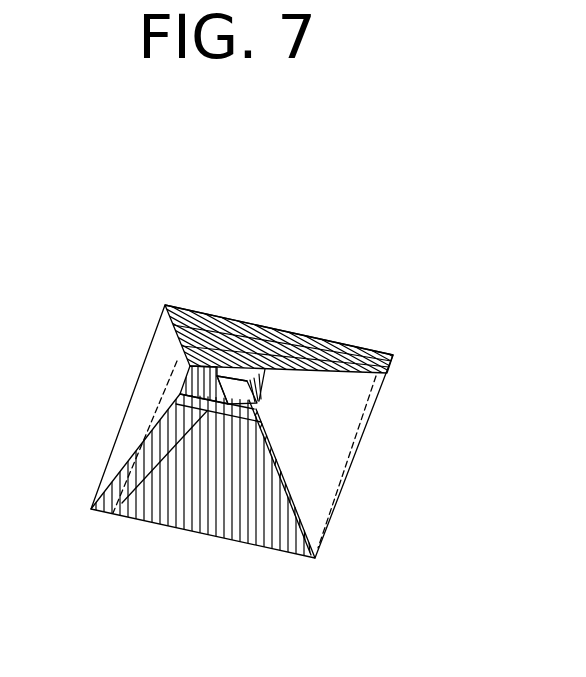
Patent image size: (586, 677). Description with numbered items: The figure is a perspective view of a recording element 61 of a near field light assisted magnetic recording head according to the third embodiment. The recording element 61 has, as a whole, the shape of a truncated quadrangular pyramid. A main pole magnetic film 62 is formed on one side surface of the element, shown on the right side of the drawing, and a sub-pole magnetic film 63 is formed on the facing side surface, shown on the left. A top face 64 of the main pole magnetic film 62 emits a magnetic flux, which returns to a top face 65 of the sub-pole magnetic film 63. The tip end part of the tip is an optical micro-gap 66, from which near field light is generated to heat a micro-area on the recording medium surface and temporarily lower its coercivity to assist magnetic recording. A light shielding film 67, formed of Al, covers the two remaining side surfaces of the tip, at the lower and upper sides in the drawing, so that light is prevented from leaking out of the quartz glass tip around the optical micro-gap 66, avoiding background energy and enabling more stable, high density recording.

The recording element 61 is at (90, 144).
The main pole magnetic film 62 is at (330, 470).
The sub-pole magnetic film 63 is at (132, 418).
The top face of the main pole magnetic film 64 is at (258, 394).
The top face of the sub-pole magnetic film 65 is at (193, 378).
The optical micro-gap 66 is at (236, 385).
The light shielding film 67 is at (317, 343).